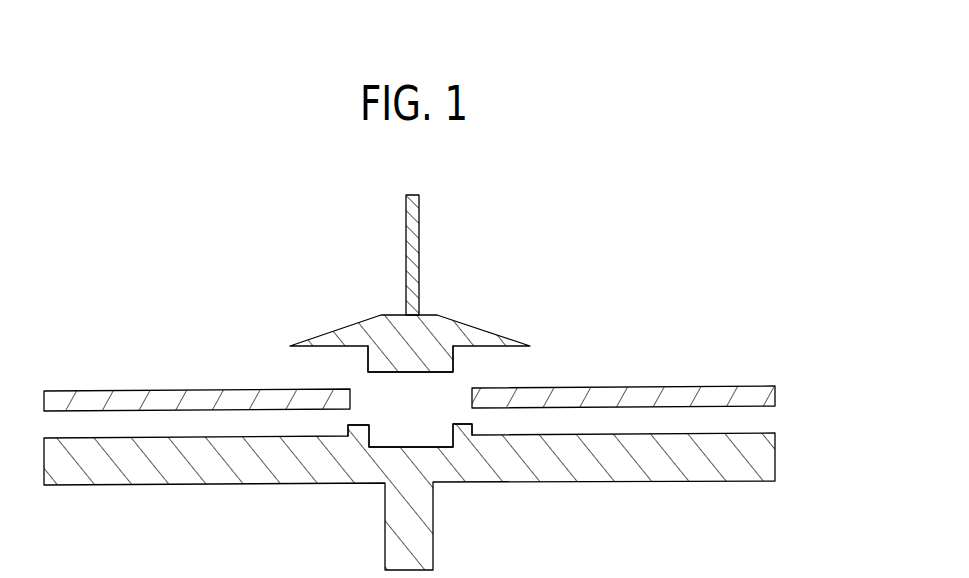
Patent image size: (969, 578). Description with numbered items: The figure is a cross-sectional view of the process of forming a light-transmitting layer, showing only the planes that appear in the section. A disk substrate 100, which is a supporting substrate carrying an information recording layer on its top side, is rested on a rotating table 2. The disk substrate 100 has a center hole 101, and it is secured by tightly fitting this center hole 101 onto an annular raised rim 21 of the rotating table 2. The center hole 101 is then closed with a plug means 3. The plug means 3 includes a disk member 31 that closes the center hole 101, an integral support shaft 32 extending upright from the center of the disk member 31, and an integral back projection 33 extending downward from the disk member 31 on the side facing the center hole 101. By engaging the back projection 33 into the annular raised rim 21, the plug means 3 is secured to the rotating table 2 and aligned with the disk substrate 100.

The rotating table 2 is at (767, 457).
The annular raised rim 21 is at (453, 425).
The disk substrate 100 is at (768, 398).
The center hole 101 is at (370, 396).
The plug means 3 is at (454, 283).
The disk member 31 is at (433, 316).
The support shaft 32 is at (412, 280).
The back projection 33 is at (470, 355).